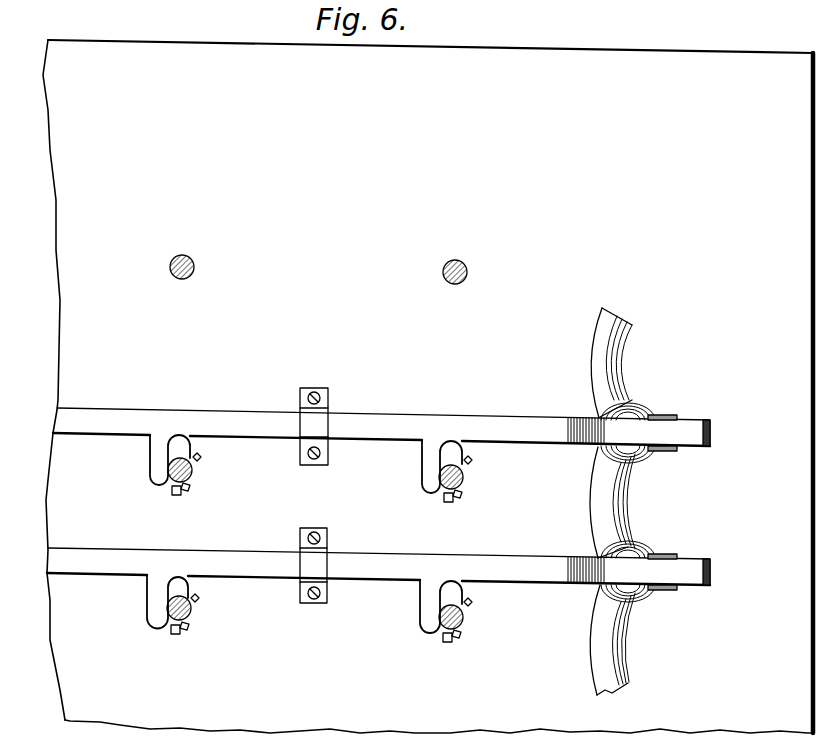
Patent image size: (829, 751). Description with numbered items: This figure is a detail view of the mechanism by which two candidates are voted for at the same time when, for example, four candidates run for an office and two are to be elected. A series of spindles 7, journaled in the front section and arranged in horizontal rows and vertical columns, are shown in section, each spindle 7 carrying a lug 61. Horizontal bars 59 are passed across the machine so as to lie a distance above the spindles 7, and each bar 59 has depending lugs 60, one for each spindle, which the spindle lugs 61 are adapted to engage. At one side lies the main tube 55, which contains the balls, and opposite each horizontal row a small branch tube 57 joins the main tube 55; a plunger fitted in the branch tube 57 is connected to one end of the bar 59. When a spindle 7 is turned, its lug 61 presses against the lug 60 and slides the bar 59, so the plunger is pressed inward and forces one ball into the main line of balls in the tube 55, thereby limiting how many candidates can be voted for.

The spindle 7 is at (198, 266).
The tube 55 is at (622, 378).
The branch tube 57 is at (670, 415).
The horizontal bar 59 is at (507, 425).
The depending lug 60 is at (157, 465).
The spindle lug 61 is at (187, 442).